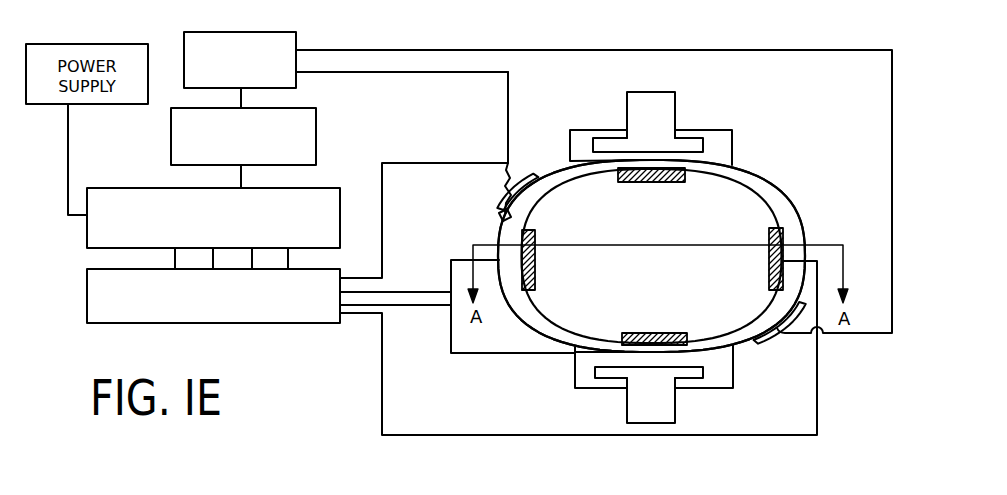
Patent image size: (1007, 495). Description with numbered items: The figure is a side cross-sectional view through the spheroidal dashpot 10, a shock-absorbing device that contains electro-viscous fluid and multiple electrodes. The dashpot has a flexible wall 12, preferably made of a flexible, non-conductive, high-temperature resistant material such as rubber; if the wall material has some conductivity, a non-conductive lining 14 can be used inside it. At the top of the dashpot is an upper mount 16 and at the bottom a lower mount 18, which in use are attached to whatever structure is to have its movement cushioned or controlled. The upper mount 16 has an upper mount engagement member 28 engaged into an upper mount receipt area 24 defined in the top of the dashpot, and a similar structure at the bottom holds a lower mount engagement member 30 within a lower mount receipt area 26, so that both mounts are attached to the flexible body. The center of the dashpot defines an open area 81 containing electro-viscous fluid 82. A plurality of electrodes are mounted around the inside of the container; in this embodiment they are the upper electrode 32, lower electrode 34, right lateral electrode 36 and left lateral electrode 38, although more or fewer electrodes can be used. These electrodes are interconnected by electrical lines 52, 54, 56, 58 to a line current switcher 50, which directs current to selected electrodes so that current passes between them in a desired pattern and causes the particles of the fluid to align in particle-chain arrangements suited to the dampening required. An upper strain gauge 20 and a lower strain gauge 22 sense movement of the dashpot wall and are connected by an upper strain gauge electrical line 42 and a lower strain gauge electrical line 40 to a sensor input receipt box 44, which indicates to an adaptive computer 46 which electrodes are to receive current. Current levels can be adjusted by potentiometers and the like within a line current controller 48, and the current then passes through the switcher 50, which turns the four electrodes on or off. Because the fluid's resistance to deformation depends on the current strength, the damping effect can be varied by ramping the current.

The spheroidal dashpot 10 is at (805, 164).
The flexible wall 12 is at (768, 195).
The lining 14 is at (550, 327).
The upper mount 16 is at (650, 112).
The lower mount 18 is at (645, 415).
The upper strain gauge 20 is at (537, 173).
The lower strain gauge 22 is at (770, 331).
The upper mount receipt area 24 is at (685, 137).
The lower mount receipt area 26 is at (708, 370).
The upper mount engagement member 28 is at (713, 140).
The lower mount engagement member 30 is at (595, 372).
The upper electrode 32 is at (648, 183).
The lower electrode 34 is at (648, 333).
The right lateral electrode 36 is at (780, 230).
The left lateral electrode 38 is at (500, 213).
The lower strain gauge electrical line 40 is at (745, 50).
The upper strain gauge electrical line 42 is at (508, 137).
The sensor input receipt box 44 is at (276, 33).
The adaptive computer 46 is at (292, 120).
The line current controller 48 is at (313, 196).
The line current switcher 50 is at (317, 321).
The electrical line 52 is at (383, 218).
The electrical line 54 is at (440, 295).
The electrical line 56 is at (465, 357).
The electrical line 58 is at (383, 378).
The open area 81 is at (688, 302).
The electro-viscous fluid 82 is at (698, 258).